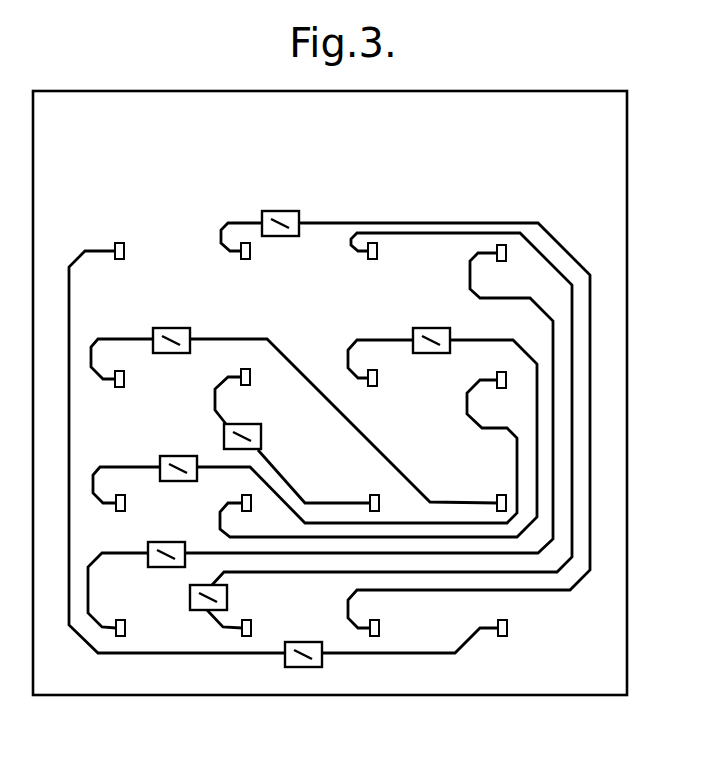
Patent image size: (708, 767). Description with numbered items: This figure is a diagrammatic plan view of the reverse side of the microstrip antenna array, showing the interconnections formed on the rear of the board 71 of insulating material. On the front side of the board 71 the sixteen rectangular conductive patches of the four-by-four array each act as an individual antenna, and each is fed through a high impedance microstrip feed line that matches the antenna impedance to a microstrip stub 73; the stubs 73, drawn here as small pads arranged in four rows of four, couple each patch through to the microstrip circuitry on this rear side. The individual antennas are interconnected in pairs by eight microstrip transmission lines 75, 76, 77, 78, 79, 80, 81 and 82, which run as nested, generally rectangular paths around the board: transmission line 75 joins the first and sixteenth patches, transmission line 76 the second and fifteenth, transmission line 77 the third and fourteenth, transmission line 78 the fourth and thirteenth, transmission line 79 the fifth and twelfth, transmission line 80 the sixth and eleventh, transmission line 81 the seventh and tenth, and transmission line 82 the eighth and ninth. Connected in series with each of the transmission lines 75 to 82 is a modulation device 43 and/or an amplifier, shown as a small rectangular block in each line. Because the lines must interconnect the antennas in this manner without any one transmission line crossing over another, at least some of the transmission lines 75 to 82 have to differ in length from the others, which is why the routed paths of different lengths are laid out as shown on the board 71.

The board 71 is at (636, 151).
The modulation device 43 is at (292, 211).
The microstrip stub 73 is at (119, 243).
The transmission line 75 is at (540, 306).
The transmission line 76 is at (354, 242).
The transmission line 77 is at (420, 222).
The transmission line 78 is at (70, 280).
The transmission line 79 is at (117, 466).
The transmission line 80 is at (352, 338).
The transmission line 81 is at (215, 398).
The transmission line 82 is at (96, 338).